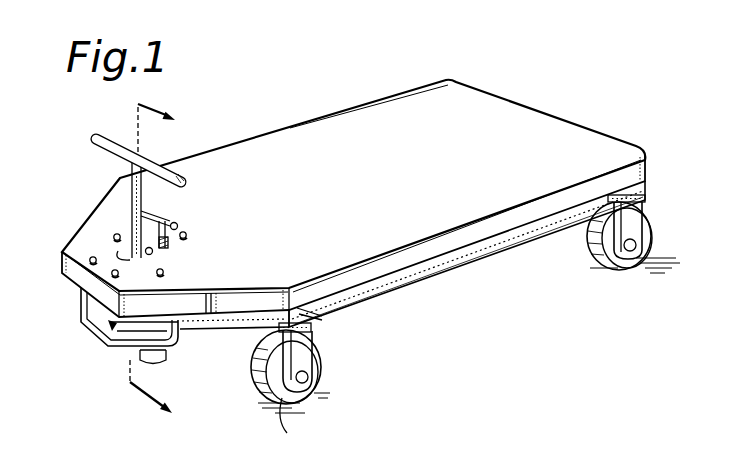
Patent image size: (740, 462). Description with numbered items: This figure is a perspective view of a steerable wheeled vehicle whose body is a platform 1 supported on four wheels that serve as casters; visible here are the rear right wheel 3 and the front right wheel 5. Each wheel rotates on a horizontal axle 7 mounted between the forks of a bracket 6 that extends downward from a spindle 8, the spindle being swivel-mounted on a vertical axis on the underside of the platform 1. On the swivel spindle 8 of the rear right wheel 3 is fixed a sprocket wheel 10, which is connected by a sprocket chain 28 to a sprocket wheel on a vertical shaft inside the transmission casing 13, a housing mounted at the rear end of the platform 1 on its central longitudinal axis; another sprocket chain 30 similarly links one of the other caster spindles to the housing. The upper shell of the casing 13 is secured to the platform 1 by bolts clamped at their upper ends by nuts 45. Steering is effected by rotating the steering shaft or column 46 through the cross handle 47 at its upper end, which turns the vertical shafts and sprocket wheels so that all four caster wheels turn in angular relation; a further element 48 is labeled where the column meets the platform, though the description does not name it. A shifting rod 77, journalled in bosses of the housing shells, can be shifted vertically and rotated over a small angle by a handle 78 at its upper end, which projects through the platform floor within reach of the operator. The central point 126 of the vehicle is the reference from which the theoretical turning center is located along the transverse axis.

The platform 1 is at (353, 203).
The rear right wheel 3 is at (210, 275).
The front right wheel 5 is at (615, 270).
The bracket 6 is at (314, 336).
The horizontal axle 7 is at (308, 398).
The spindle 8 is at (314, 322).
The sprocket wheel 10 is at (318, 311).
The transmission casing 13 is at (108, 353).
The sprocket chain 28 is at (250, 328).
The sprocket chain 30 is at (500, 250).
The nuts 45 is at (120, 222).
The steering shaft or column 46 is at (130, 196).
The cross handle 47 is at (147, 158).
The stem socket 48 is at (153, 253).
The shifting rod 77 is at (176, 243).
The handle 78 is at (178, 222).
The central point 126 is at (388, 183).